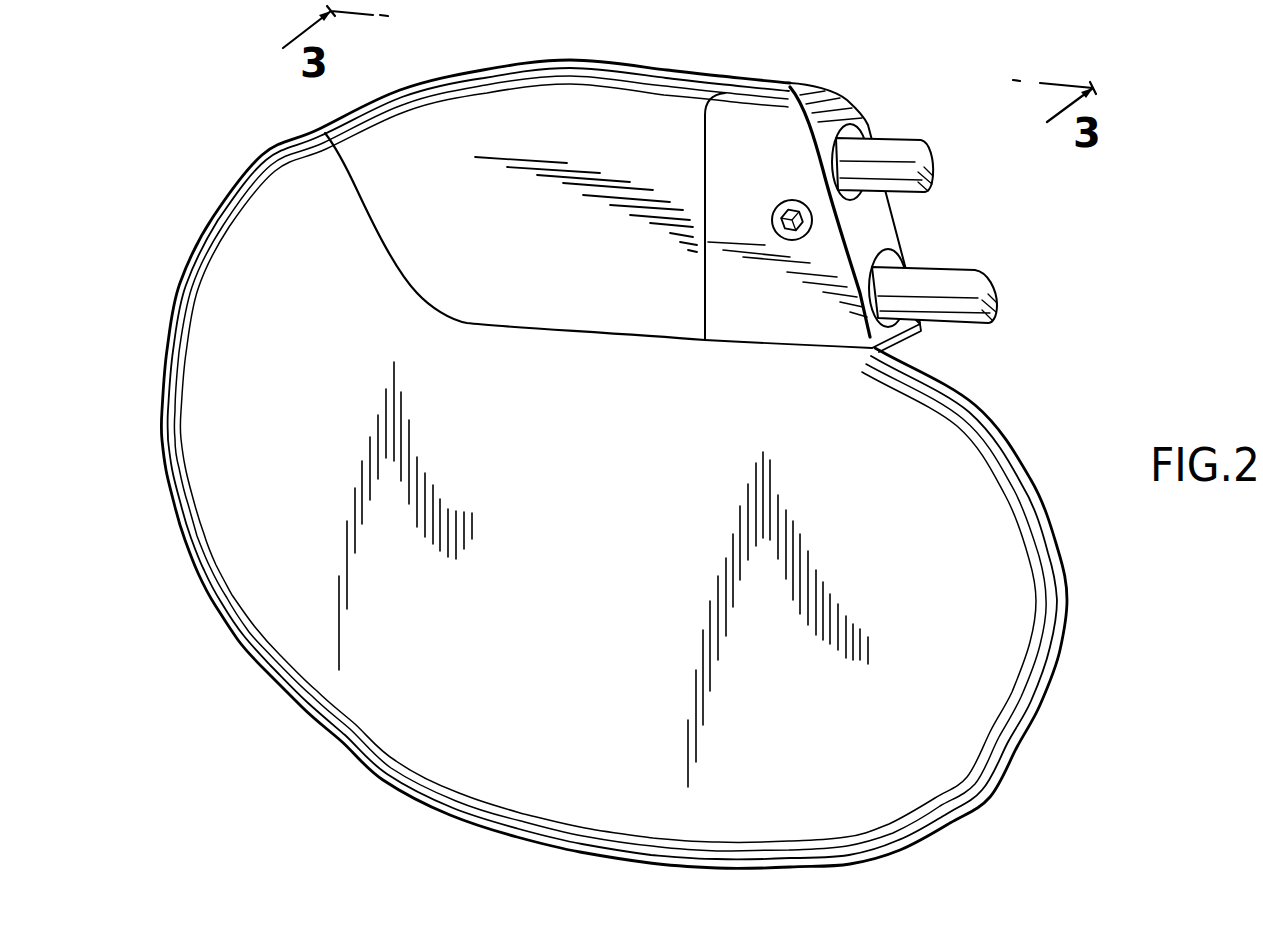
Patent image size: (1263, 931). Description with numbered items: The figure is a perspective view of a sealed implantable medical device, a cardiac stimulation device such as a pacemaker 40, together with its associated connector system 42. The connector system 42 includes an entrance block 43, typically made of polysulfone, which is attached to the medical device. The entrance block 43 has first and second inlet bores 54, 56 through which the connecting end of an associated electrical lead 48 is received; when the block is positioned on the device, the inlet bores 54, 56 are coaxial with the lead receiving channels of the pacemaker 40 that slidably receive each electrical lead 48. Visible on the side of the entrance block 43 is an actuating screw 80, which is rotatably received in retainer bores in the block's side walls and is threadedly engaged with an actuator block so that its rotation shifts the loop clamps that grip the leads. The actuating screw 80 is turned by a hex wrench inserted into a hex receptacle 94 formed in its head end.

The pacemaker 40 is at (226, 162).
The connector system 42 is at (882, 87).
The entrance block 43 is at (758, 117).
The electrical lead 48 is at (913, 158).
The first inlet bore 54 is at (847, 160).
The second inlet bore 56 is at (913, 267).
The actuating screw 80 is at (787, 197).
The hex receptacle 94 is at (786, 228).